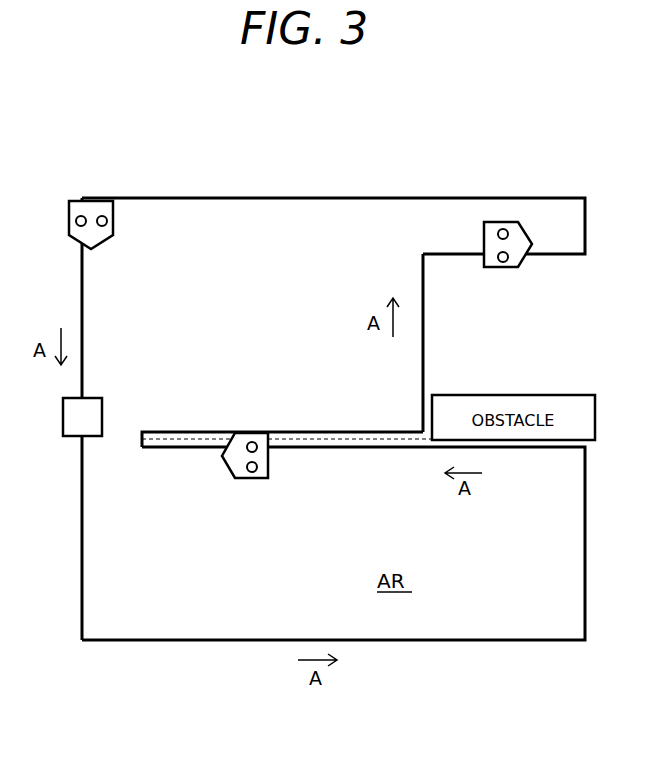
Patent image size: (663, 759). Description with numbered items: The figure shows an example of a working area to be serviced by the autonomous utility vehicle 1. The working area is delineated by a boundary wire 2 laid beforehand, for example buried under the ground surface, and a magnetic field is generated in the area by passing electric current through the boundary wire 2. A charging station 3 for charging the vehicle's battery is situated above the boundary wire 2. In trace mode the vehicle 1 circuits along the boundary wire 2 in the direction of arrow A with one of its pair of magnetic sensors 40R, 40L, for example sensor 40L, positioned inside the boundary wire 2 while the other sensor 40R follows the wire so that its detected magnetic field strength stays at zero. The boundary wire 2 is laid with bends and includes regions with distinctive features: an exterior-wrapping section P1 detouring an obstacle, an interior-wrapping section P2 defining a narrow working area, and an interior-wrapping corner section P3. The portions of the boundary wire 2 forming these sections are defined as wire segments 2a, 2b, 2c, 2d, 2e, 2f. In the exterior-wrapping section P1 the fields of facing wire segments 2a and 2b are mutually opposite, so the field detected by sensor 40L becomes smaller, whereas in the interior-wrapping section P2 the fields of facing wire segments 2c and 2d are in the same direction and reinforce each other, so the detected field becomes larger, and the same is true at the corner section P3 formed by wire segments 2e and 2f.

The utility vehicle 1 is at (328, 337).
The boundary wire 2 is at (305, 390).
The wire segment 2a is at (192, 448).
The wire segment 2b is at (190, 430).
The wire segment 2c is at (455, 258).
The wire segment 2d is at (430, 198).
The wire segment 2e is at (184, 198).
The wire segment 2f is at (80, 264).
The charging station 3 is at (63, 415).
The magnetic sensor 40R is at (81, 215).
The magnetic sensor 40L is at (103, 215).
The exterior-wrapping section P1 is at (280, 466).
The interior-wrapping section P2 is at (536, 265).
The interior-wrapping corner section P3 is at (126, 223).